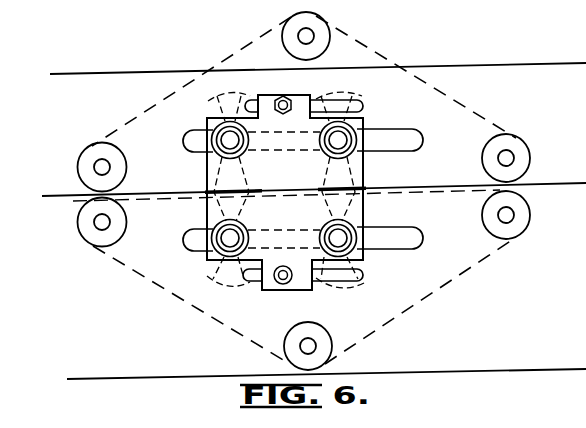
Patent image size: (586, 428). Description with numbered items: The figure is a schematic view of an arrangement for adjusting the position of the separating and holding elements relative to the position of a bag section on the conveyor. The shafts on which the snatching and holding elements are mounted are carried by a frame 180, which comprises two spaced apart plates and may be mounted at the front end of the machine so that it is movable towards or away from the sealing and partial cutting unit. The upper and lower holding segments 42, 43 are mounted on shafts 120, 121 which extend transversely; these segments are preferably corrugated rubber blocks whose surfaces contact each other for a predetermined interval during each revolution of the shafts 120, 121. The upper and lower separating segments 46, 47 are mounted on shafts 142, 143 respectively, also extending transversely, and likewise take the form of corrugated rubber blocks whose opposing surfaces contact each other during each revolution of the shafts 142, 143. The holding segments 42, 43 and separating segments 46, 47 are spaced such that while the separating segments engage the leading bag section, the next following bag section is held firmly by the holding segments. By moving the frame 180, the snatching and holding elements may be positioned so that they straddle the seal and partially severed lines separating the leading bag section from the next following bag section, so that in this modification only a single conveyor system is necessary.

The upper holding segment 42 is at (363, 103).
The lower holding segment 43 is at (362, 282).
The upper separating segment 46 is at (216, 104).
The lower separating segment 47 is at (217, 275).
The shaft 120 is at (350, 133).
The shaft 121 is at (352, 229).
The shaft 142 is at (221, 151).
The shaft 143 is at (226, 230).
The frame 180 is at (366, 169).